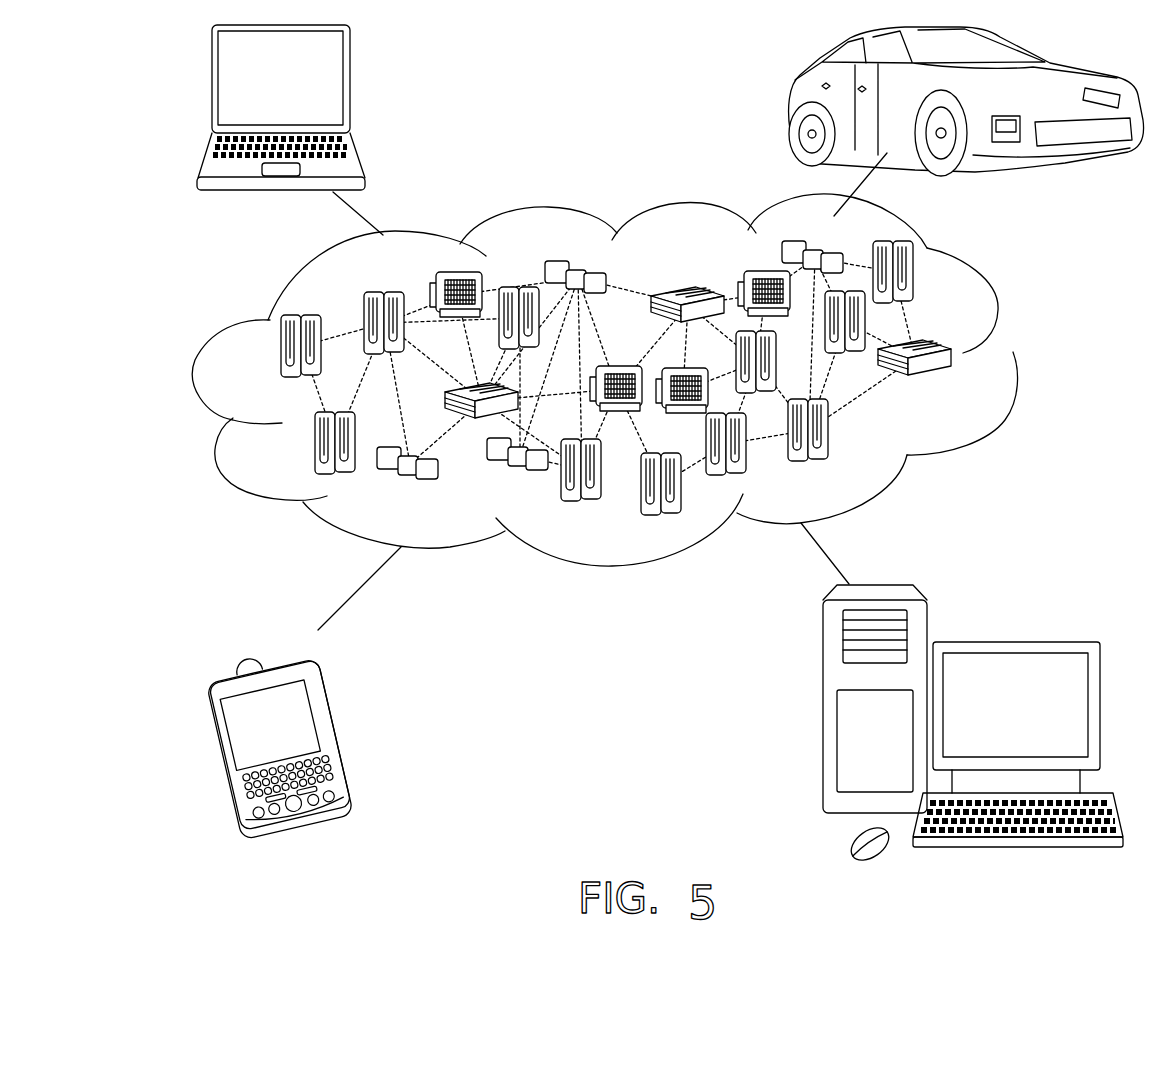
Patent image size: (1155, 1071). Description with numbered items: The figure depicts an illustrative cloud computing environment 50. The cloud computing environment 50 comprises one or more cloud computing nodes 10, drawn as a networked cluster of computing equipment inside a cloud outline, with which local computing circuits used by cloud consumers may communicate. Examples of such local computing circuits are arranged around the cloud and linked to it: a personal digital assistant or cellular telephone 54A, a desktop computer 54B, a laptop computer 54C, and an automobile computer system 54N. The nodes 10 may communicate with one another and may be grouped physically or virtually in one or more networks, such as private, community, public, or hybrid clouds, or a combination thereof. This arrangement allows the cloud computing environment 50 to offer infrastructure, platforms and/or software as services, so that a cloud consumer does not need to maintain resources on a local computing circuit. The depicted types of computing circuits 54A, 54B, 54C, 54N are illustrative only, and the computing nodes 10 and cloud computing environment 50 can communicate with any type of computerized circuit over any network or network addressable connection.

The cloud computing node 10 is at (964, 390).
The cloud computing environment 50 is at (1015, 356).
The personal digital assistant (PDA) or cellular telephone 54A is at (340, 737).
The desktop computer 54B is at (1013, 642).
The laptop computer 54C is at (352, 83).
The automobile computer system 54N is at (790, 100).